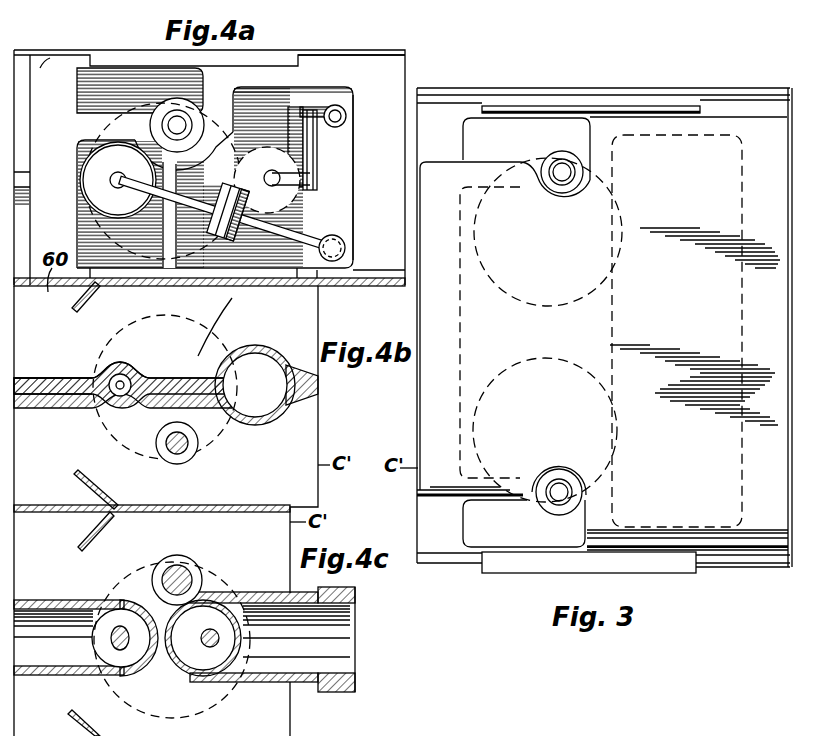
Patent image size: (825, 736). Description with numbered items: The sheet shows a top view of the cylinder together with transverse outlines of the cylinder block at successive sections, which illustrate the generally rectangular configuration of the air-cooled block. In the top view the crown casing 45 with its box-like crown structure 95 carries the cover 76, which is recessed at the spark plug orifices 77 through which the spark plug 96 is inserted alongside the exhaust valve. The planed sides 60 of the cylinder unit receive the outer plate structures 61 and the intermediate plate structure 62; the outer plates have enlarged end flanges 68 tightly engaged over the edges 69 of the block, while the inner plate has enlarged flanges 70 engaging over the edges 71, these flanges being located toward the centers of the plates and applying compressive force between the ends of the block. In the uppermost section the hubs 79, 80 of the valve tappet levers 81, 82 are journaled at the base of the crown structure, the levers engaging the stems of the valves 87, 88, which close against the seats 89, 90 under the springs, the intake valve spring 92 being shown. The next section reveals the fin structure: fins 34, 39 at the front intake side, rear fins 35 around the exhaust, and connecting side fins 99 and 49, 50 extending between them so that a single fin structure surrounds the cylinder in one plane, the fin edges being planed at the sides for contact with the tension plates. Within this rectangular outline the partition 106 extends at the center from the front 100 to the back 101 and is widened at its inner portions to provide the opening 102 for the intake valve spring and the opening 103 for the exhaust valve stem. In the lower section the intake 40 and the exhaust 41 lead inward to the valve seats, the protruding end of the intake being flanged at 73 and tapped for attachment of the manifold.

In FIG. 4C, the face fins 34 is at (166, 624).
In FIG. 4B, the rear fins 35 is at (38, 399).
In FIG. 4C, the rear fins 35 is at (34, 624).
In FIG. 4B, the face fins 39 is at (297, 399).
In FIG. 4C, the intake 40 is at (182, 637).
In FIG. 4C, the exhaust 41 is at (92, 638).
In FIG. 4A, the crown casing 45 is at (382, 280).
In FIG. 4C, the side fins 49 is at (172, 620).
In FIG. 4C, the side fins 50 is at (128, 717).
In FIG. 4A, the sides 60 is at (54, 74).
In FIG. 4B, the sides 60 is at (48, 512).
In FIG. 4C, the sides 60 is at (40, 735).
In FIG. 4A, the plate structures 61 is at (80, 52).
In FIG. 3, the plate structures 61 is at (476, 96).
In FIG. 4A, the intermediate plate structure 62 is at (258, 286).
In FIG. 4B, the intermediate plate structure 62 is at (232, 512).
In FIG. 4C, the intermediate plate structure 62 is at (218, 735).
In FIG. 3, the intermediate plate structure 62 is at (742, 572).
In FIG. 4A, the end flanges 68 is at (282, 60).
In FIG. 3, the end flanges 68 is at (560, 102).
In FIG. 4A, the edges 69 is at (352, 60).
In FIG. 3, the edges 69 is at (438, 112).
In FIG. 3, the flanges 70 is at (680, 574).
In FIG. 3, the edges 71 is at (460, 552).
In FIG. 4C, the flange 73 is at (343, 692).
In FIG. 3, the cover 76 is at (620, 331).
In FIG. 3, the spark plug orifices 77 is at (580, 148).
In FIG. 4A, the hub 79 is at (247, 202).
In FIG. 4A, the hub 80 is at (348, 112).
In FIG. 4A, the valve tappet lever 81 is at (137, 192).
In FIG. 4A, the valve tappet lever 82 is at (290, 143).
In FIG. 4C, the valve 87 is at (123, 645).
In FIG. 4C, the valve 88 is at (203, 644).
In FIG. 4C, the valve seat 89 is at (121, 637).
In FIG. 4C, the valve seat 90 is at (203, 638).
In FIG. 4A, the spring 92 is at (290, 200).
In FIG. 4A, the crown structure 95 is at (322, 52).
In FIG. 4A, the spark plug 96 is at (185, 103).
In FIG. 4C, the spark plug 96 is at (194, 572).
In FIG. 4B, the side fins 99 is at (168, 396).
In FIG. 4B, the front 100 is at (320, 386).
In FIG. 4B, the back 101 is at (32, 378).
In FIG. 4B, the opening 102 is at (255, 385).
In FIG. 4B, the opening 103 is at (134, 374).
In FIG. 4B, the partition 106 is at (222, 322).